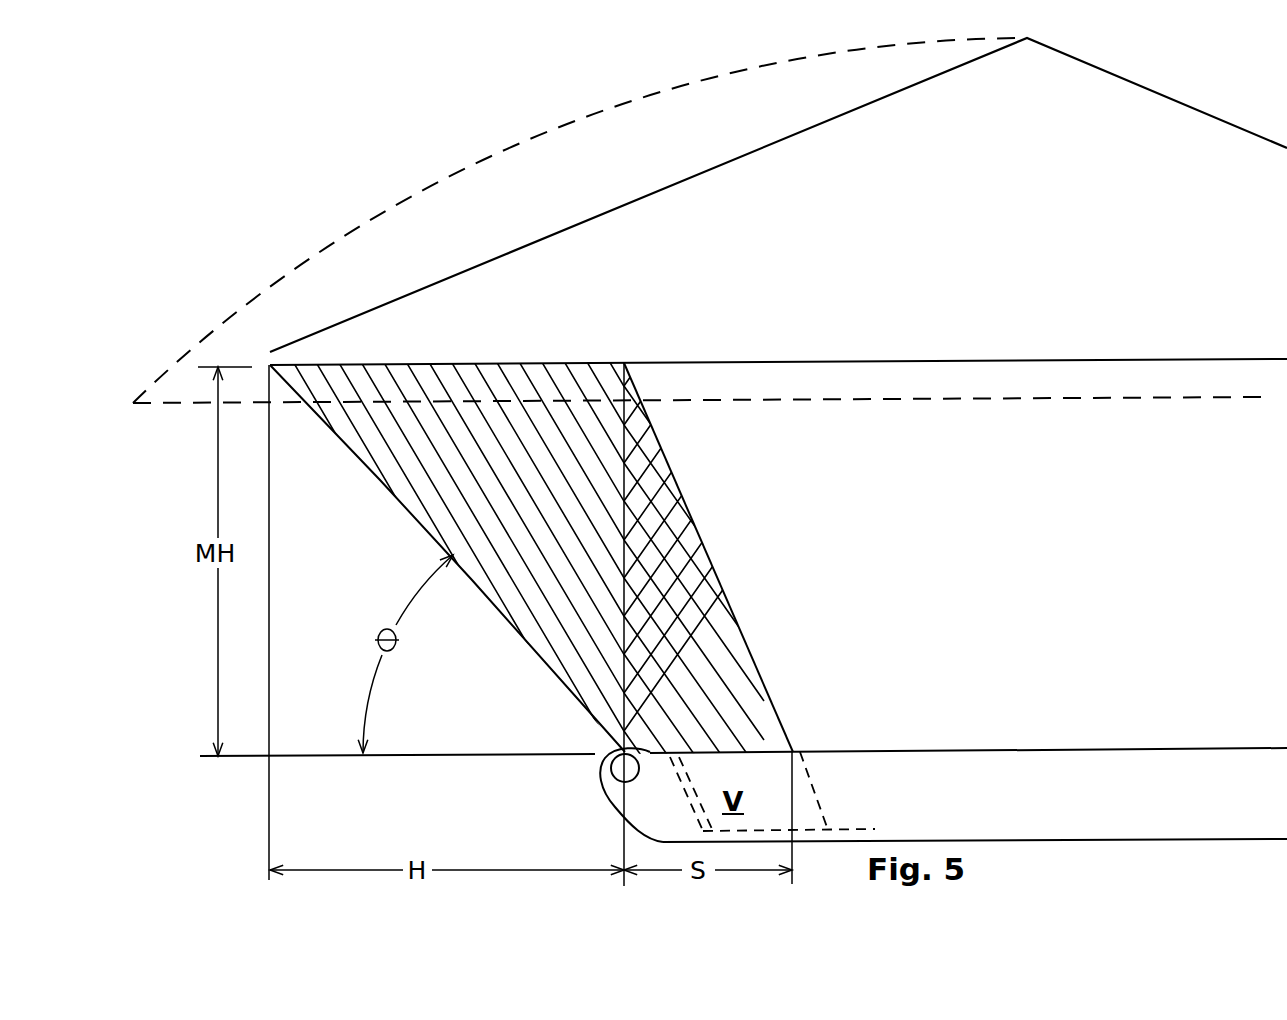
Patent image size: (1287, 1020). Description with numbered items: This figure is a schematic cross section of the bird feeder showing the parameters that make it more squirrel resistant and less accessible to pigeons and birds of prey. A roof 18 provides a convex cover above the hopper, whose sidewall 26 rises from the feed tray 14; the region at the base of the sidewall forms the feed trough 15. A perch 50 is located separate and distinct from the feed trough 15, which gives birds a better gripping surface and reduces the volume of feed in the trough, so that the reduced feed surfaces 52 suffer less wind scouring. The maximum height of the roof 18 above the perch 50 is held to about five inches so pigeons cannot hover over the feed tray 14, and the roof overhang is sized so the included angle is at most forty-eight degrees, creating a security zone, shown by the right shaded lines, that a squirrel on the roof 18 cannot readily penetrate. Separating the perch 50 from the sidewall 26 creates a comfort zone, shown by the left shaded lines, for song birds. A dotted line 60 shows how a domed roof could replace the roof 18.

The roof 18 is at (537, 202).
The dotted line 60 is at (367, 222).
The sidewall 26 is at (697, 520).
The feed surfaces 52 is at (748, 747).
The feed trough 15 is at (763, 782).
The perch 50 is at (610, 777).
The feed tray 14 is at (678, 793).